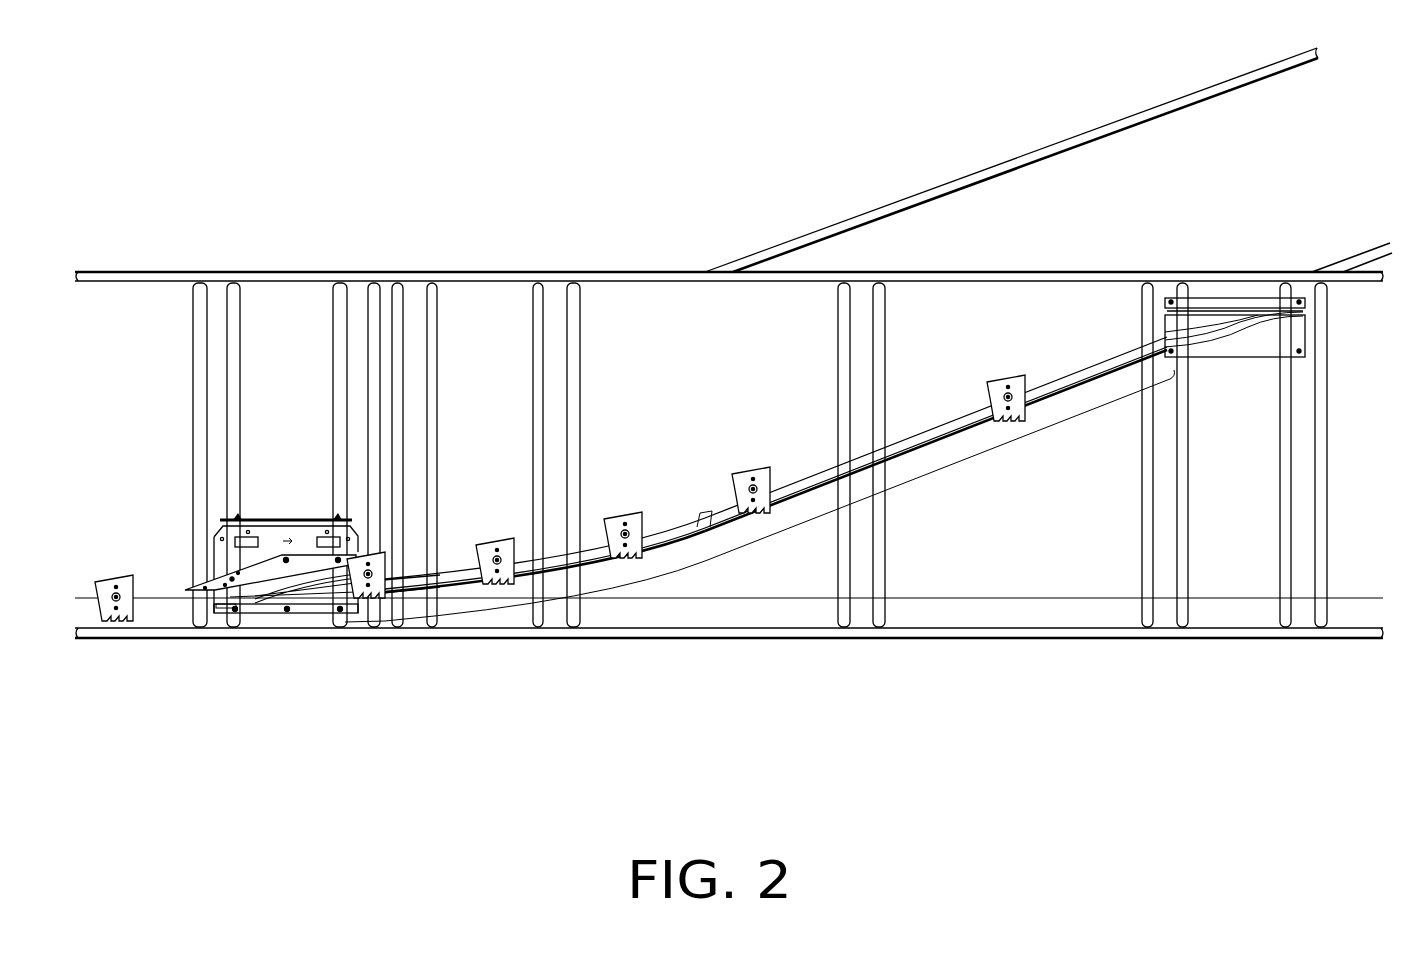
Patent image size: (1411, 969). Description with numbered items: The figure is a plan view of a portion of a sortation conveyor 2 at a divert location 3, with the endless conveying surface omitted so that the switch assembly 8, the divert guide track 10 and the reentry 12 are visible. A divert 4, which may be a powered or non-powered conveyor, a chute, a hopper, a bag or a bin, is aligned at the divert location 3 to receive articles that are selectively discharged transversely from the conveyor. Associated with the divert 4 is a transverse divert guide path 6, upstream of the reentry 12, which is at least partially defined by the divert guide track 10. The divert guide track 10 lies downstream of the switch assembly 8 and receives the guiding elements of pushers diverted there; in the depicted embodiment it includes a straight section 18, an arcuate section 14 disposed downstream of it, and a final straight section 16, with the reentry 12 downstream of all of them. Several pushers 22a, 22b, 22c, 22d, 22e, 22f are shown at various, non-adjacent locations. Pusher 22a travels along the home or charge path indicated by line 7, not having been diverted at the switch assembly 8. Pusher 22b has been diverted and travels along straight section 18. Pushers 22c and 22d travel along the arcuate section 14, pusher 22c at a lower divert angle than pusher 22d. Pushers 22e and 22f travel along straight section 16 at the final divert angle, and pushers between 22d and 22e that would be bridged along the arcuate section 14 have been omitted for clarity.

The sortation conveyor 2 is at (478, 165).
The divert location 3 is at (185, 677).
The divert 4 is at (985, 150).
The divert guide path 6 is at (724, 392).
The home or charge path 7 is at (162, 600).
The switch assembly 8 is at (316, 609).
The divert guide track 10 is at (792, 530).
The reentry 12 is at (1210, 300).
The arcuate section 14 is at (446, 575).
The straight section 16 is at (806, 476).
The straight section 18 is at (398, 575).
The pusher 22a is at (106, 574).
The pusher 22b is at (365, 552).
The pusher 22c is at (507, 537).
The pusher 22d is at (616, 513).
The pusher 22e is at (758, 466).
The pusher 22f is at (1010, 374).